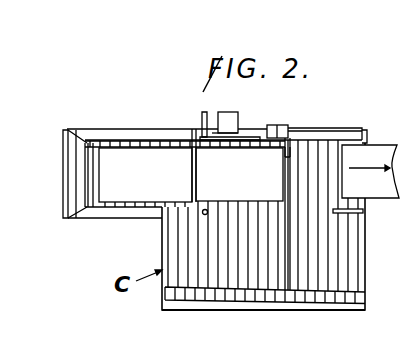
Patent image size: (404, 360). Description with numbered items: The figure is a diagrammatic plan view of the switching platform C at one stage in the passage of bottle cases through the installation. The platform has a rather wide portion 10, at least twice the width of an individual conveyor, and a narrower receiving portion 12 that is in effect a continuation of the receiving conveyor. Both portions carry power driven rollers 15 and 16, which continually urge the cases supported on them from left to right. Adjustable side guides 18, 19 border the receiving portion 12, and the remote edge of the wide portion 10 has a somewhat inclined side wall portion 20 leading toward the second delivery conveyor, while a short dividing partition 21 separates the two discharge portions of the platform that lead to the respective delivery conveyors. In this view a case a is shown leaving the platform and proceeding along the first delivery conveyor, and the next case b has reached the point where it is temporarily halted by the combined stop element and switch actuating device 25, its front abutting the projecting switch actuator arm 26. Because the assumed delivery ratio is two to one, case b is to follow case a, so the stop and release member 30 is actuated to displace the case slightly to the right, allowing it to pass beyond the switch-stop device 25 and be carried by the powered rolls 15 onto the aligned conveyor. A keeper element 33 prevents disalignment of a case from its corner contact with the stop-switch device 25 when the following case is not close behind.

The wide portion 10 is at (380, 146).
The receiving portion 12 is at (84, 185).
The power driven rollers 15 is at (176, 246).
The power driven rollers 16 is at (89, 160).
The adjustable side guide 18 is at (106, 136).
The adjustable side guide 19 is at (94, 217).
The inclined side wall portion 20 is at (237, 291).
The dividing partition 21 is at (353, 213).
The combined stop element and switch actuating device 25 is at (278, 124).
The switch actuator arm 26 is at (292, 147).
The stop and release member 30 is at (213, 122).
The keeper element 33 is at (206, 209).